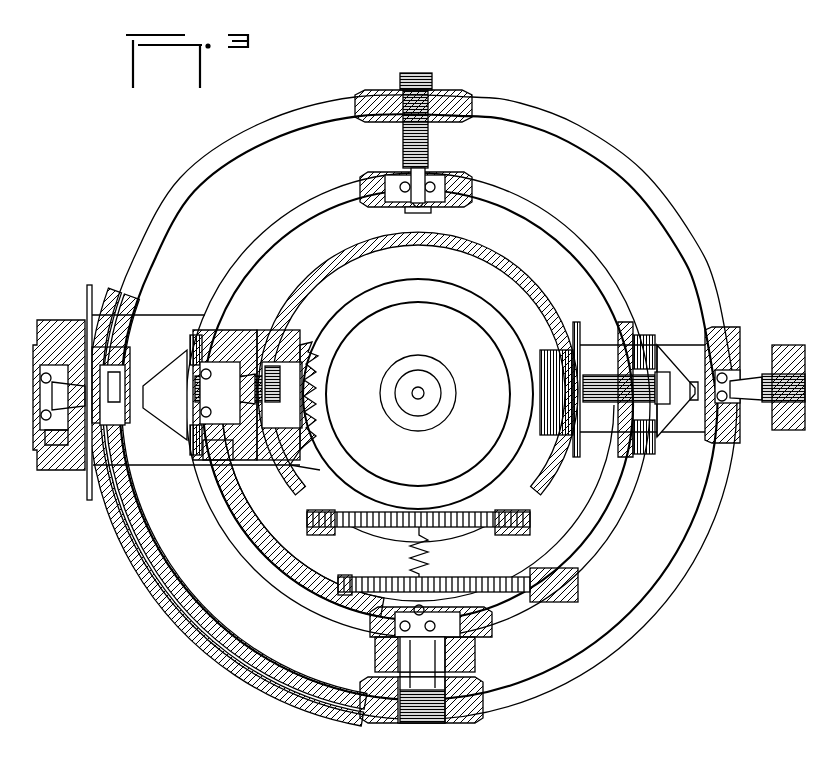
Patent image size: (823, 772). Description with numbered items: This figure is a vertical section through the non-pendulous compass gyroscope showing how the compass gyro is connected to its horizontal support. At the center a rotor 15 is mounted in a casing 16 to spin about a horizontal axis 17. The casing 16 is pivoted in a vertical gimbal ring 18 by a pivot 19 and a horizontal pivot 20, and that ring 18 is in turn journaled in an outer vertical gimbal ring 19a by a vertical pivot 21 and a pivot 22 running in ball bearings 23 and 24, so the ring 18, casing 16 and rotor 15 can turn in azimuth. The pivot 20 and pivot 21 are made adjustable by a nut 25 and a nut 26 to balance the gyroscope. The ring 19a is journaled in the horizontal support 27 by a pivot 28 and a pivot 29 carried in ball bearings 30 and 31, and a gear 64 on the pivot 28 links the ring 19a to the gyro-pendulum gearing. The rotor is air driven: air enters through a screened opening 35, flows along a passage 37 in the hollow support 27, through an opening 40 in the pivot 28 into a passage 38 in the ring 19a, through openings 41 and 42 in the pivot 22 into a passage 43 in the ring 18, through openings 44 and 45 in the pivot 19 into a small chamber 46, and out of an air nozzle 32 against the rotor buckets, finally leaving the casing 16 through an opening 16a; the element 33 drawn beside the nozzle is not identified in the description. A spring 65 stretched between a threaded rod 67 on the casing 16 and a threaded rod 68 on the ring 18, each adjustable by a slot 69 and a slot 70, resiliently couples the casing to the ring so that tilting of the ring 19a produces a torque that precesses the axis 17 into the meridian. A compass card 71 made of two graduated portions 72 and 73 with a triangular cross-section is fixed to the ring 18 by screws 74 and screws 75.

The rotor 15 is at (490, 297).
The casing 16 is at (497, 251).
The opening 16a is at (482, 545).
The horizontal axis 17 is at (420, 391).
The vertical gimbal ring 18 is at (606, 283).
The pivot 19 is at (233, 345).
The vertical gimbal ring 19a is at (601, 150).
The horizontal pivot 20 is at (601, 404).
The vertical pivot 21 is at (430, 156).
The pivot 22 is at (476, 657).
The ball bearing 23 is at (440, 190).
The ball bearing 24 is at (440, 613).
The nut 25 is at (663, 406).
The nut 26 is at (433, 82).
The horizontal support 27 is at (776, 345).
The pivot 28 is at (60, 320).
The pivot 29 is at (757, 403).
The ball bearing 30 is at (42, 352).
The ball bearing 31 is at (742, 373).
The air nozzle 32 is at (305, 460).
The spline teeth 33 is at (304, 344).
The screened opening 35 is at (130, 348).
The passage 37 is at (62, 455).
The passage 38 is at (134, 524).
The opening 40 is at (128, 380).
The opening 41 is at (385, 665).
The opening 42 is at (420, 724).
The passage 43 is at (306, 596).
The opening 44 is at (268, 330).
The opening 45 is at (216, 466).
The chamber 46 is at (276, 356).
The gear 64 is at (90, 285).
The spring 65 is at (431, 556).
The threaded rod 67 is at (490, 510).
The threaded rod 68 is at (376, 575).
The slot 69 is at (531, 520).
The slot 70 is at (579, 583).
The compass card 71 is at (660, 352).
The portion 72 is at (690, 376).
The portion 73 is at (680, 410).
The screws 74 is at (196, 334).
The screws 75 is at (194, 458).